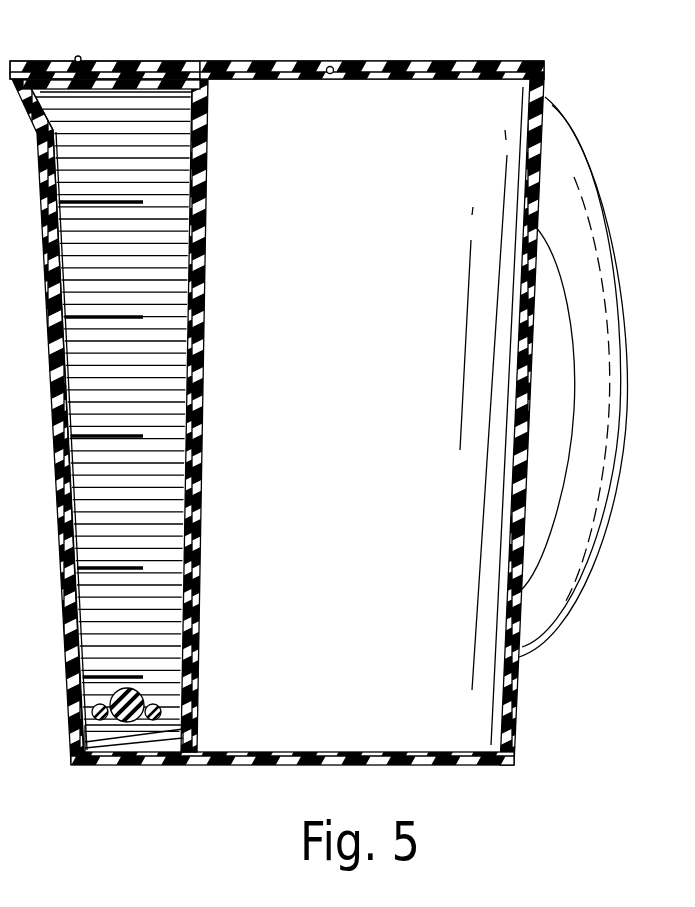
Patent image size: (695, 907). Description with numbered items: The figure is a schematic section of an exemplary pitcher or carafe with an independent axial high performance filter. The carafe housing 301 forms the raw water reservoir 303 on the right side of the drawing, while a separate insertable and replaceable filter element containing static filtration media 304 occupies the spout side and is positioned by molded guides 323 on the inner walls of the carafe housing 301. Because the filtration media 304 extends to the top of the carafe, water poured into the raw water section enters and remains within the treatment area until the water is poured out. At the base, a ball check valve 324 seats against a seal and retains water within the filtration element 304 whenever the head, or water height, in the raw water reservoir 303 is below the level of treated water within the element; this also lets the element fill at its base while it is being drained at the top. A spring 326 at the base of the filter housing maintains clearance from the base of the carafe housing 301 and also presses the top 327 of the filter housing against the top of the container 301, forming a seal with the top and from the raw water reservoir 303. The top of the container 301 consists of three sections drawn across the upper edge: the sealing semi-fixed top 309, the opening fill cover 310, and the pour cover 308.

The carafe housing 301 is at (70, 727).
The raw water reservoir 303 is at (307, 710).
The filtration media 304 is at (100, 588).
The pour cover 308 is at (40, 75).
The sealing semi-fixed top 309 is at (280, 72).
The opening fill cover 310 is at (478, 67).
The molded guides 323 is at (191, 512).
The ball check valve 324 is at (133, 722).
The spring 326 is at (105, 744).
The top of housing 327 is at (107, 86).